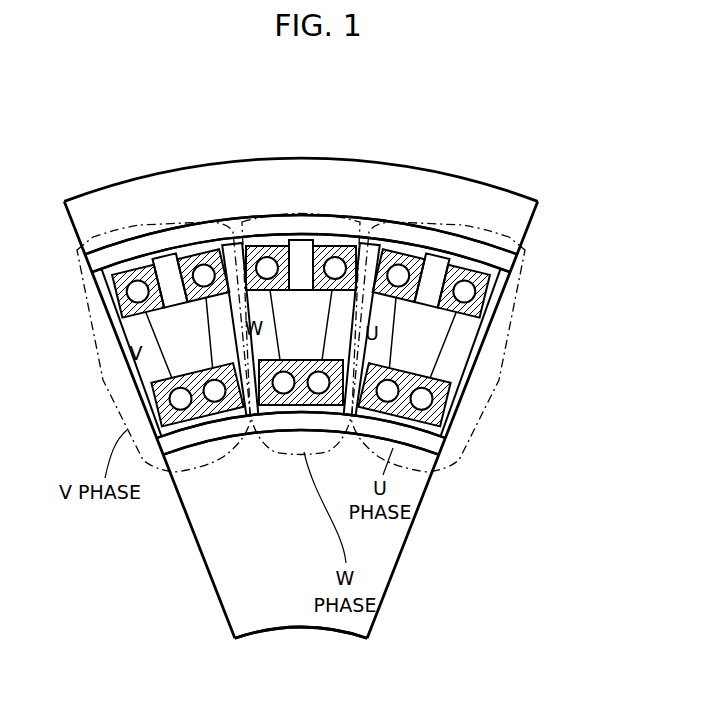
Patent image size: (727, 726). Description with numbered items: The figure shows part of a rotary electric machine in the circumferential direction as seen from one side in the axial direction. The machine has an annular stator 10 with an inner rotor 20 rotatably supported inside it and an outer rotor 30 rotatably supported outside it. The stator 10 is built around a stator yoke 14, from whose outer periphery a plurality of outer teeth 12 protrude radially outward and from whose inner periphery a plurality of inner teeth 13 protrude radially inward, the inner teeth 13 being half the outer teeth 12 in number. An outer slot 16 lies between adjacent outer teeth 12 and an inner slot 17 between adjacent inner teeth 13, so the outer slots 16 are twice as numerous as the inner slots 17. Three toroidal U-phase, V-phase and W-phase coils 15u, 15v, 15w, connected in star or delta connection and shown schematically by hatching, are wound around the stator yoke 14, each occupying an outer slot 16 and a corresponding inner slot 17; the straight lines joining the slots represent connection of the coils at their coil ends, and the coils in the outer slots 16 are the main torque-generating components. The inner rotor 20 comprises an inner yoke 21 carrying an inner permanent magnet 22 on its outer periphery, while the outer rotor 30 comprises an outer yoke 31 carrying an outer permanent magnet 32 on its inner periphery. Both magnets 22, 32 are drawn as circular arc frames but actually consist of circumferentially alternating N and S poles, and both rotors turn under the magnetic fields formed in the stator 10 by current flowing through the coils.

The annular stator 10 is at (461, 398).
The outer teeth 12 is at (230, 247).
The inner teeth 13 is at (258, 445).
The stator yoke 14 is at (466, 343).
The U-phase coil 15u is at (402, 250).
The V-phase coil 15v is at (128, 266).
The W-phase coil 15w is at (267, 245).
The outer slot 16 is at (344, 250).
The inner slot 17 is at (281, 428).
The inner rotor 20 is at (378, 612).
The inner yoke 21 is at (367, 553).
The inner permanent magnet 22 is at (440, 443).
The outer rotor 30 is at (526, 231).
The outer yoke 31 is at (512, 197).
The outer permanent magnet 32 is at (507, 258).